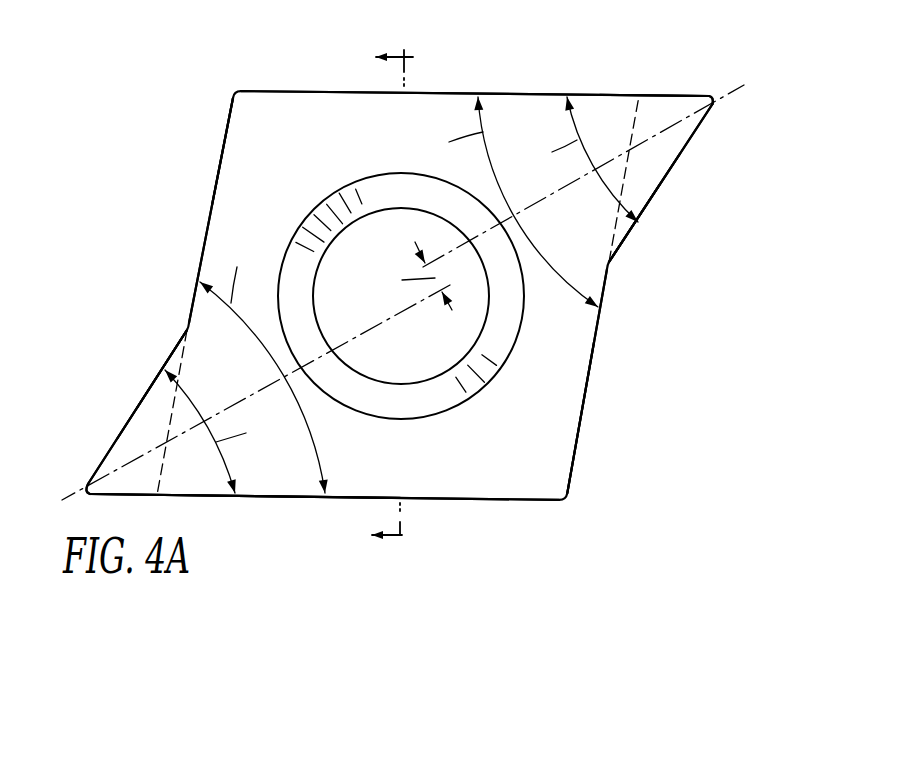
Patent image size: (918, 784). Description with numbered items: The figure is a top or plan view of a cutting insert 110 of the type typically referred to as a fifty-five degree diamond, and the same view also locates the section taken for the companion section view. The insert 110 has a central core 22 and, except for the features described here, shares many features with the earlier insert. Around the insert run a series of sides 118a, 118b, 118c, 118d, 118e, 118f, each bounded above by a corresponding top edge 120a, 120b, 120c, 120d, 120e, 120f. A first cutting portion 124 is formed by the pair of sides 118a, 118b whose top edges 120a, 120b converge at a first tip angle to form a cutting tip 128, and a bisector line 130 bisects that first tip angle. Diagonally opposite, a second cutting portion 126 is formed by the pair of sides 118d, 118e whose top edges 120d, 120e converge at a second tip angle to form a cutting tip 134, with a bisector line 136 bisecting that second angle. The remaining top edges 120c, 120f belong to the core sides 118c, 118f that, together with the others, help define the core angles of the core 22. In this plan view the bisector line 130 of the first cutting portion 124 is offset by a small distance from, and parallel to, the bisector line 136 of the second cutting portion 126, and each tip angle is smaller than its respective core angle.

The cutting insert 110 is at (271, 32).
The core 22 is at (509, 99).
The side 118a is at (657, 95).
The side 118b is at (636, 224).
The side 118c is at (581, 428).
The side 118d is at (280, 500).
The side 118e is at (150, 396).
The side 118f is at (230, 120).
The top edge 120a is at (629, 94).
The top edge 120b is at (651, 207).
The top edge 120c is at (588, 400).
The top edge 120d is at (521, 502).
The top edge 120e is at (137, 403).
The top edge 120f is at (224, 144).
The first cutting portion 124 is at (684, 141).
The second cutting portion 126 is at (104, 460).
The cutting tip 128 is at (715, 106).
The bisector line 130 is at (582, 177).
The cutting tip 134 is at (83, 486).
The bisector line 136 is at (230, 403).